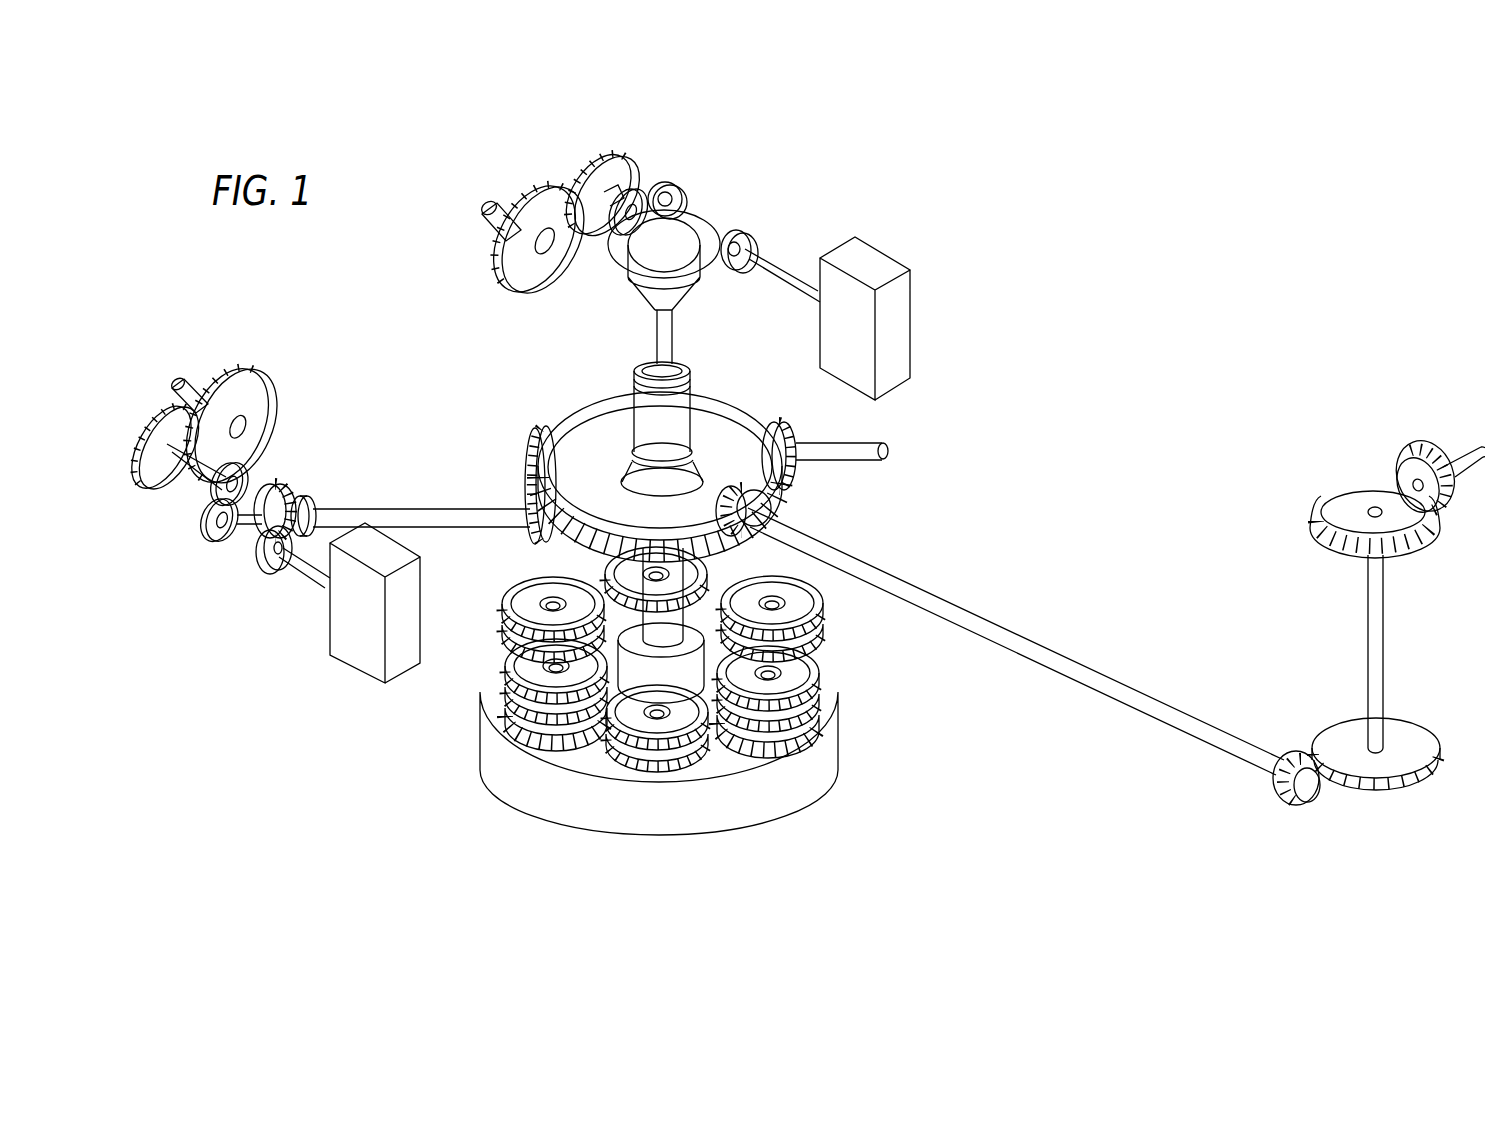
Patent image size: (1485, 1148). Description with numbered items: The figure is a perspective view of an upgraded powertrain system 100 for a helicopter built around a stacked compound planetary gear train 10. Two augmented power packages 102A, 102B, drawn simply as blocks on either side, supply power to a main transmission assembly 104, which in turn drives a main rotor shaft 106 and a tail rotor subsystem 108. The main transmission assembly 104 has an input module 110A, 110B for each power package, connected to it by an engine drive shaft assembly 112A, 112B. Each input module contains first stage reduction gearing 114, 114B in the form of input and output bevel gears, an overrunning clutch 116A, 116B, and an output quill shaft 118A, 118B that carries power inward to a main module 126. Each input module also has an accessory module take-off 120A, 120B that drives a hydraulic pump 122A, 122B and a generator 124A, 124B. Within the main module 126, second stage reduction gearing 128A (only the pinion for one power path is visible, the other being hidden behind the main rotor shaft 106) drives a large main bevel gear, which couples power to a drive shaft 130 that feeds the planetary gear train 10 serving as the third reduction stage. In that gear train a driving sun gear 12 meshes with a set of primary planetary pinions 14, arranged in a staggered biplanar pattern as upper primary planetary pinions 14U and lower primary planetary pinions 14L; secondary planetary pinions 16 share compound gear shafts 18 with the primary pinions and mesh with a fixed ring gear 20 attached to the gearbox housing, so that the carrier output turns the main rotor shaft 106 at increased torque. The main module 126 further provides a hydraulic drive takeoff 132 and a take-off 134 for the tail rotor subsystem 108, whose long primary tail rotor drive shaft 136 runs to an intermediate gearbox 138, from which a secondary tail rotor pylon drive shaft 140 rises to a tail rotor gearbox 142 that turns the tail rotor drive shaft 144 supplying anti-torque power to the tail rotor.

The upgraded powertrain system 100 is at (1158, 330).
The stacked compound planetary gear train 10 is at (881, 798).
The driving sun gear 12 is at (690, 672).
The primary planetary pinions 14 is at (947, 642).
The upper primary planetary pinions 14U is at (804, 692).
The lower primary planetary pinions 14L is at (833, 650).
The secondary planetary pinions 16 is at (693, 779).
The compound gear shafts 18 is at (664, 779).
The fixed ring gear 20 is at (550, 800).
The augmented power package 102A is at (352, 676).
The augmented power package 102B is at (921, 313).
The main transmission assembly 104 is at (448, 668).
The main rotor shaft 106 is at (636, 372).
The tail rotor subsystem 108 is at (1317, 488).
The input module 110A is at (216, 612).
The input module 110B is at (748, 184).
The engine drive shaft assembly 112A is at (311, 584).
The engine drive shaft assembly 112B is at (786, 266).
The first stage reduction gearing 114 is at (260, 551).
The first stage reduction gearing 114B is at (728, 238).
The overrunning clutch 116A is at (314, 500).
The overrunning clutch 116B is at (636, 302).
The output quill shaft 118A is at (457, 528).
The output quill shaft 118B is at (676, 346).
The accessory module take-off 120A is at (190, 504).
The accessory module take-off 120B is at (653, 188).
The hydraulic pump 122A is at (238, 372).
The hydraulic pump 122B is at (543, 188).
The generator 124A is at (150, 422).
The generator 124B is at (636, 160).
The main module 126 is at (570, 404).
The second stage reduction gearing 128A is at (527, 510).
The drive shaft 130 is at (656, 608).
The hydraulic drive takeoff 132 is at (892, 446).
The take-off 134 is at (790, 500).
The primary tail rotor drive shaft 136 is at (1065, 700).
The intermediate gearbox 138 is at (1340, 804).
The secondary tail rotor pylon drive shaft 140 is at (1346, 650).
The tail rotor gearbox 142 is at (1378, 488).
The tail rotor drive shaft 144 is at (1452, 440).